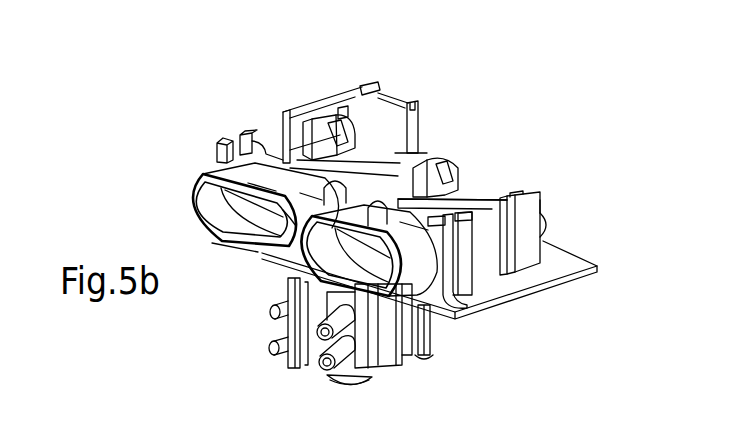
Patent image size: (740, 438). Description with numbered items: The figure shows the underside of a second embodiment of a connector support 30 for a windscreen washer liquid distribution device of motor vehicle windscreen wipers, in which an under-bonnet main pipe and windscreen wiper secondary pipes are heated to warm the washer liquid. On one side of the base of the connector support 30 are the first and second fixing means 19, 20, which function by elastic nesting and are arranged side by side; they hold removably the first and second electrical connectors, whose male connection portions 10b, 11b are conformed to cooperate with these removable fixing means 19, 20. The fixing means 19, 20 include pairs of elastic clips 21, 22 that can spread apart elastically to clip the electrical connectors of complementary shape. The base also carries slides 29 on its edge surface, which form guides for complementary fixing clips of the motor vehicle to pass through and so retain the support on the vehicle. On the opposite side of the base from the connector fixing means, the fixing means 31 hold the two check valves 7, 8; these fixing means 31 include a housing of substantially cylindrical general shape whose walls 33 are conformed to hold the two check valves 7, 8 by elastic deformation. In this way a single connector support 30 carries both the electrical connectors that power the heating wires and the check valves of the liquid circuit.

The check valve 7 is at (353, 390).
The check valve 8 is at (335, 297).
The male connection portion 10b is at (200, 193).
The male connection portion 11b is at (467, 180).
The first fixing means 19 is at (343, 104).
The second fixing means 20 is at (547, 201).
The elastic clips 21 is at (330, 133).
The elastic clips 22 is at (248, 140).
The slides 29 is at (382, 100).
The connector support 30 is at (572, 262).
The fixing means 31 is at (387, 373).
The walls 33 is at (413, 330).